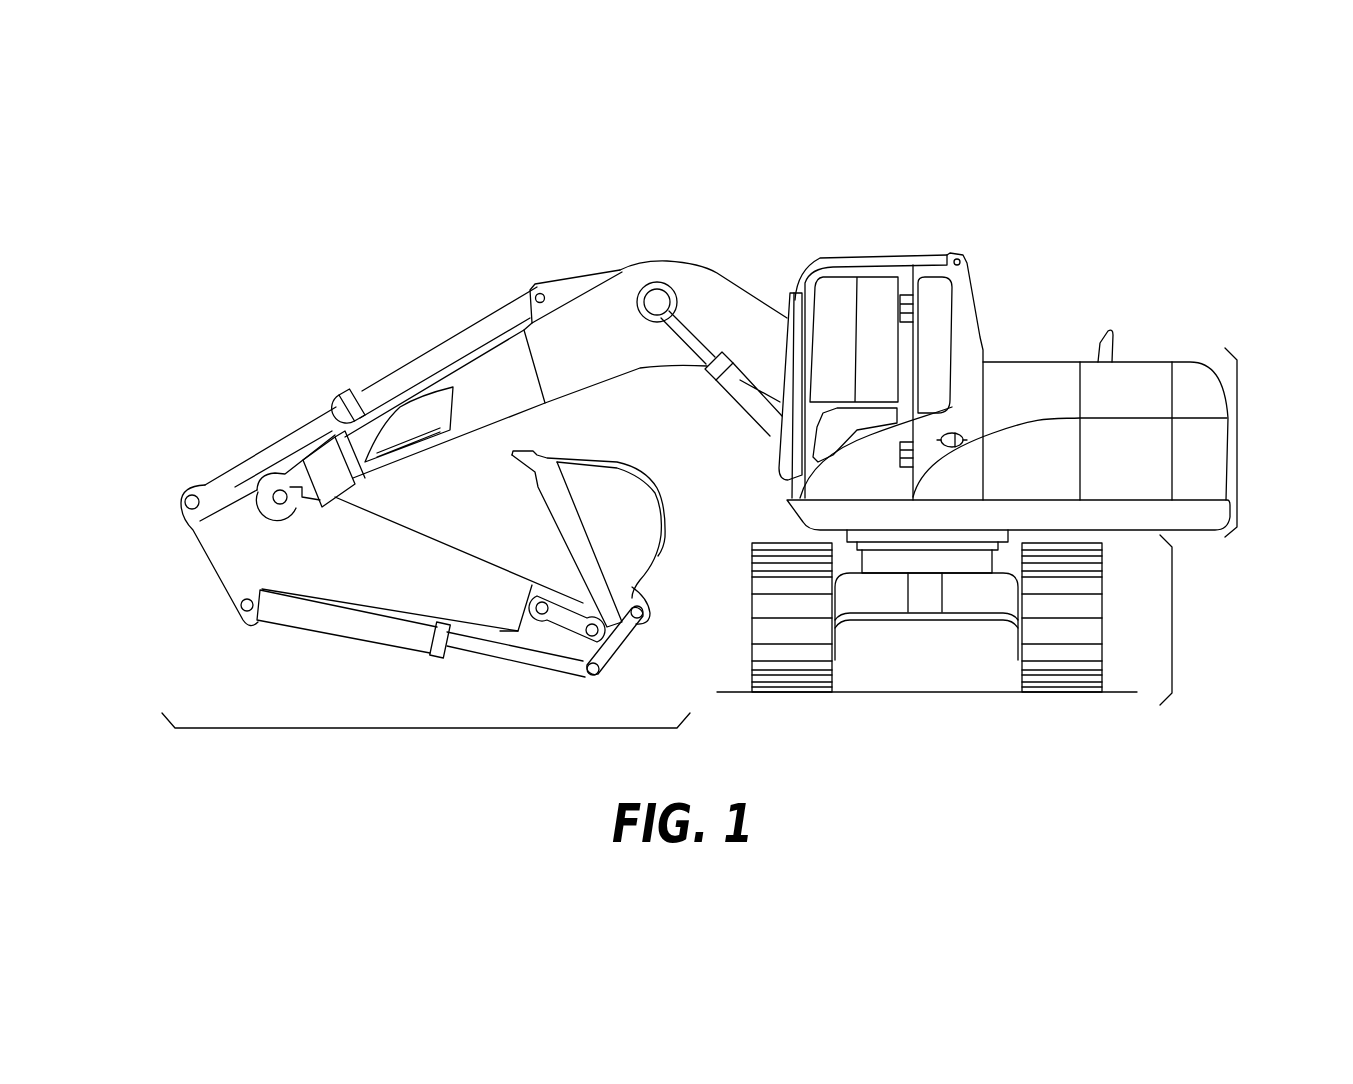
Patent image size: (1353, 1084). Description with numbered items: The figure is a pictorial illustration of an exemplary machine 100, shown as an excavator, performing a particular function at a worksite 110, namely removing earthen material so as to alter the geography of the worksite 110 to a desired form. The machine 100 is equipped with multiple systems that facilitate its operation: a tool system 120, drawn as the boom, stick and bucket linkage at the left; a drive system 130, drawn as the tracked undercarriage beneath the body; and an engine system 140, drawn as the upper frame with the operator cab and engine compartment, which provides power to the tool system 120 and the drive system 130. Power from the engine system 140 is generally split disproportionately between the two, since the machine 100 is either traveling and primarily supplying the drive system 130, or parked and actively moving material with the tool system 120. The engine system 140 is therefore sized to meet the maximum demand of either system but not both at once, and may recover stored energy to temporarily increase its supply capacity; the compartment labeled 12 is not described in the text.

The machine 100 is at (1141, 194).
The worksite 110 is at (307, 286).
The tool system 120 is at (413, 728).
The drive system 130 is at (1172, 612).
The engine system 140 is at (1238, 427).
The power source (engine compartment) 12 is at (1133, 464).